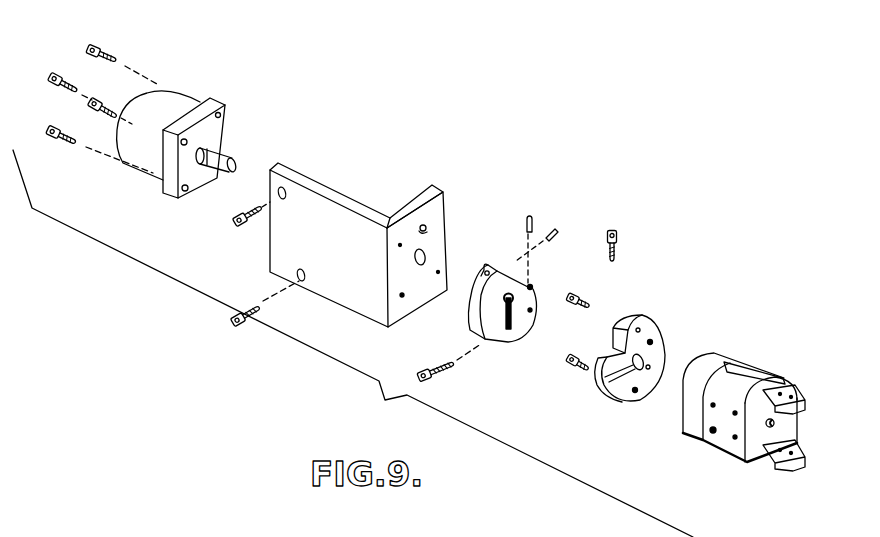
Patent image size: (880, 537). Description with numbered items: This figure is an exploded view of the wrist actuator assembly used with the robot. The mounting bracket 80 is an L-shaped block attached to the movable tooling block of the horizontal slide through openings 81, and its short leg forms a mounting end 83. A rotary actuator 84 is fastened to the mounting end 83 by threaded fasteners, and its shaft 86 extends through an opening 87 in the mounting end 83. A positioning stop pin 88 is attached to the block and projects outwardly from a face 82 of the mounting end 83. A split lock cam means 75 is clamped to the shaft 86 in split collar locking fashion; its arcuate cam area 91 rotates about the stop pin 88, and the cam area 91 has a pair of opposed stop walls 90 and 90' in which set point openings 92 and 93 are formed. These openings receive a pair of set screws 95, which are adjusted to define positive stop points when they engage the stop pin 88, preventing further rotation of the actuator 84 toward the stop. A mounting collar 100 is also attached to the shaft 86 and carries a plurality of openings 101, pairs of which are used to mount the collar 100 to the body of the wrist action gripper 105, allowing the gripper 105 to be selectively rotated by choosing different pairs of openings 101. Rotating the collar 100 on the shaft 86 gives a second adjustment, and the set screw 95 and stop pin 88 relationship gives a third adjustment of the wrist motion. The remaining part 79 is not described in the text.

The split lock cam means 75 is at (487, 343).
The clamp block 79 is at (522, 312).
The mounting bracket 80 is at (368, 294).
The openings 81 is at (303, 276).
The face 82 is at (421, 290).
The mounting end 83 is at (407, 207).
The rotary actuator 84 is at (160, 128).
The shaft 86 is at (229, 164).
The opening 87 is at (426, 256).
The positioning stop pin 88 is at (428, 223).
The stop wall 90 is at (503, 247).
The stop wall 90' is at (566, 259).
The arcuate cam area 91 is at (536, 273).
The set point opening 92 is at (487, 268).
The set point opening 93 is at (534, 288).
The set screws 95 is at (533, 223).
The mounting collar 100 is at (653, 334).
The openings 101 is at (650, 369).
The wrist action gripper 105 is at (762, 382).